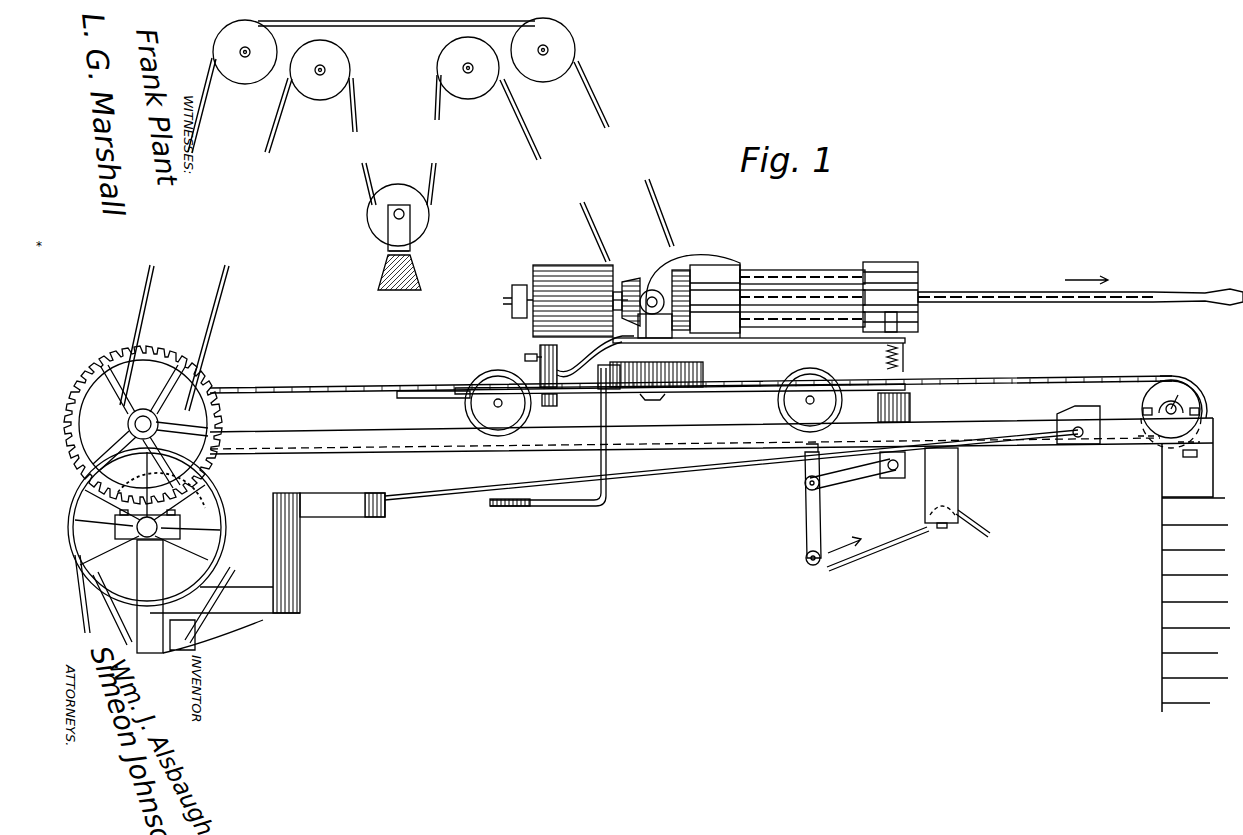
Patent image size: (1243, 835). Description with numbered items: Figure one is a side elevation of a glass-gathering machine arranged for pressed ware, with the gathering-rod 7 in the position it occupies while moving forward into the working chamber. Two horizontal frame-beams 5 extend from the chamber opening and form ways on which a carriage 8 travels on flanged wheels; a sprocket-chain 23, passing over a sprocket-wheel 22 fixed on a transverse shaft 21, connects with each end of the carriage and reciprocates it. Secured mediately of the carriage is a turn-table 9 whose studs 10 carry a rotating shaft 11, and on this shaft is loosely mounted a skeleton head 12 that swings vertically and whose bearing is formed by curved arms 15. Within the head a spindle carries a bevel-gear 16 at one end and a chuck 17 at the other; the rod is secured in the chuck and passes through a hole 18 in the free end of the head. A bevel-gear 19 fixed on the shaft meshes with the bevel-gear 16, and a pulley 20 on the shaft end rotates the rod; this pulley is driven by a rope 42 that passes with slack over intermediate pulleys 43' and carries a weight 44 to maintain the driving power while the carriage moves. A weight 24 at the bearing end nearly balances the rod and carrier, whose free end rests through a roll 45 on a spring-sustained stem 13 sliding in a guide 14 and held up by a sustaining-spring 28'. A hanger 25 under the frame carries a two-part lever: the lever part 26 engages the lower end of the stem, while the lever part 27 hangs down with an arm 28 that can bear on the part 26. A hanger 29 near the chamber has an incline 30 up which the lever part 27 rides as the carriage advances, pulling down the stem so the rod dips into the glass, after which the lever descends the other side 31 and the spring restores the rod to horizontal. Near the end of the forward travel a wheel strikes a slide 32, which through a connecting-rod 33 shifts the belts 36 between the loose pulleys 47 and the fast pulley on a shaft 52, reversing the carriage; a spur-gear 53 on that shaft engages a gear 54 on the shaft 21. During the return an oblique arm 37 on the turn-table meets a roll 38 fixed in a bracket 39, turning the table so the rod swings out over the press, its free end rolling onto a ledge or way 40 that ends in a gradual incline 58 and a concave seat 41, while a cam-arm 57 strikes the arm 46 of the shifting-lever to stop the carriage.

The frame-beams 5 is at (628, 452).
The gathering-rod 7 is at (1020, 292).
The carriage plate 8 is at (715, 394).
The turn-table 9 is at (703, 372).
The studs 10 is at (655, 326).
The shaft 11 is at (652, 297).
The skeleton head 12 is at (802, 288).
The spring-sustained stem 13 is at (893, 478).
The guide 14 is at (912, 408).
The curved arms 15 is at (680, 262).
The bevel-gear 16 is at (700, 265).
The chuck 17 is at (742, 272).
The hole 18 is at (918, 287).
The bevel-gear 19 is at (625, 290).
The pulley 20 is at (634, 282).
The shaft 21 is at (160, 424).
The sprocket-wheel 22 is at (152, 398).
The sprocket-chain 23 is at (298, 386).
The weight 24 is at (565, 301).
The hanger 25 is at (822, 465).
The lever part 26 is at (855, 470).
The lever part 27 is at (806, 530).
The arm 28 is at (790, 489).
The sustaining-spring 28' is at (868, 357).
The hanger 29 is at (958, 480).
The incline 30 is at (878, 545).
The incline side 31 is at (980, 522).
The slide 32 is at (1088, 410).
The connecting-rod 33 is at (731, 465).
The belts 36 is at (225, 575).
The arm 37 is at (520, 357).
The roll 38 is at (557, 406).
The bracket 39 is at (509, 403).
The ledge or way 40 is at (800, 370).
The depressed seat 41 is at (572, 370).
The rope 42 is at (200, 135).
The intermediate pulleys 43' is at (394, 59).
The weight 44 is at (418, 272).
The roll 45 is at (918, 322).
The arm 46 is at (337, 482).
The loose pulleys 47 is at (147, 527).
The shaft 52 is at (170, 536).
The spur-gear 53 is at (170, 500).
The gear 54 is at (205, 378).
The cam-arm 57 is at (550, 490).
The gradual incline 58 is at (608, 390).